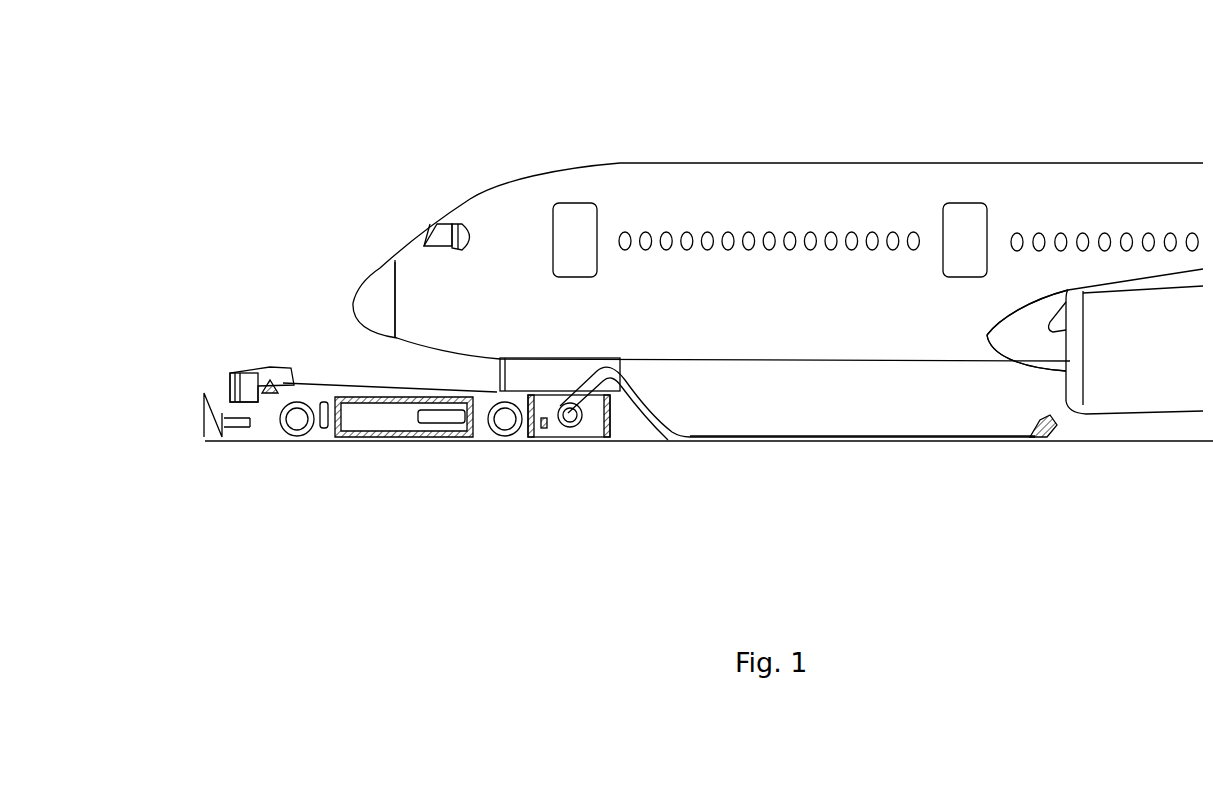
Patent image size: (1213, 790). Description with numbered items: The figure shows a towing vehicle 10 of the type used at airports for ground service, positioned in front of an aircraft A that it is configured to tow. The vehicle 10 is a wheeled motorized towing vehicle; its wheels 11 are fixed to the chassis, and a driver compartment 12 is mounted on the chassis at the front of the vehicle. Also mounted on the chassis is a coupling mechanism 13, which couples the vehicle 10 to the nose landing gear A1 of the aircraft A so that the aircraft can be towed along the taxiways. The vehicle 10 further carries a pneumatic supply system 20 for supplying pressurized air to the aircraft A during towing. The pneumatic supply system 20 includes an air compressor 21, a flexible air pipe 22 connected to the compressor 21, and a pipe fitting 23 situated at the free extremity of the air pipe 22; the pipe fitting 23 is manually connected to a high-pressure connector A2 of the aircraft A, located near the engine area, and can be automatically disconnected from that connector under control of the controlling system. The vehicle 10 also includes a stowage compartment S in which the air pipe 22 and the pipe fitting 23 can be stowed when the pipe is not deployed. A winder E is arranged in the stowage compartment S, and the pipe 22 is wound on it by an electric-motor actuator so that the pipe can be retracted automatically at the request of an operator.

The aircraft A is at (812, 163).
The nose landing gear A1 is at (497, 375).
The high-pressure connector A2 is at (1058, 371).
The vehicle 10 is at (289, 449).
The wheels 11 is at (300, 428).
The driver compartment 12 is at (249, 380).
The coupling mechanism 13 is at (512, 386).
The pneumatic supply system 20 is at (702, 447).
The air compressor 21 is at (412, 441).
The flexible air pipe 22 is at (880, 443).
The pipe fitting 23 is at (1040, 441).
The stowage compartment S is at (546, 436).
The winder E is at (572, 441).